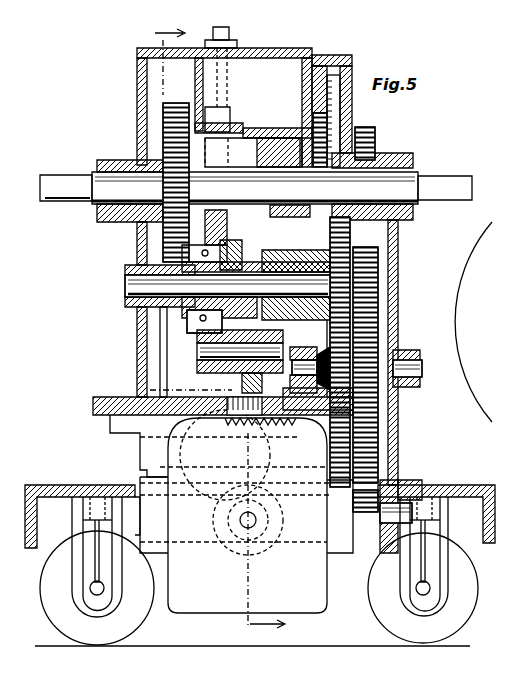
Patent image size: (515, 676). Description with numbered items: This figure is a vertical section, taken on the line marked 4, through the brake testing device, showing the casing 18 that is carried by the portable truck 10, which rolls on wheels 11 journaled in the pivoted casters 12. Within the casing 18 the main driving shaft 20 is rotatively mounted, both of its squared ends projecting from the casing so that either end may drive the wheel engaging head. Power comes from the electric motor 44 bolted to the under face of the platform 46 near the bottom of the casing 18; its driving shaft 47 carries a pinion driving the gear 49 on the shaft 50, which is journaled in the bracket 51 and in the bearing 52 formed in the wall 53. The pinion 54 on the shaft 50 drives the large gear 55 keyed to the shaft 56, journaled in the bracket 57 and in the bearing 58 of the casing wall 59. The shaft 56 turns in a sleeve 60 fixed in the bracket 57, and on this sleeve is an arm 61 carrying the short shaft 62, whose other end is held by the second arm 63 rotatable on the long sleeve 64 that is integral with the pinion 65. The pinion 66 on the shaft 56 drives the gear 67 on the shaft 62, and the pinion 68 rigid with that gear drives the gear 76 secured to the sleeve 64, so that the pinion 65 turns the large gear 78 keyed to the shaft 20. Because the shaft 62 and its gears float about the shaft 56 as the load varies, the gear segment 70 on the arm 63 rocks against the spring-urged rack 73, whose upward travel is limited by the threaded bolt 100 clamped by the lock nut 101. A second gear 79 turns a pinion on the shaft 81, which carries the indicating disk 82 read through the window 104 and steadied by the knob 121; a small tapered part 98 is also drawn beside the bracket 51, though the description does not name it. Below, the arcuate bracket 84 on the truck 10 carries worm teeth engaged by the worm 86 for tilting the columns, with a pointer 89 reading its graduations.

The section line 4 is at (220, 328).
The truck 10 is at (462, 485).
The wheels 11 is at (45, 592).
The casters 12 is at (85, 566).
The casing 18 is at (123, 252).
The main driving shaft 20 is at (386, 172).
The electric motor 44 is at (312, 573).
The platform 46 is at (95, 410).
The driving shaft of the motor 47 is at (400, 513).
The gear 49 is at (378, 435).
The shaft 50 is at (422, 370).
The bracket 51 is at (310, 356).
The bearing 52 is at (410, 350).
The wall 53 is at (398, 259).
The pinion 54 is at (330, 410).
The large gear 55 is at (350, 232).
The shaft 56 is at (125, 288).
The bracket 57 is at (296, 229).
The bearing 58 is at (128, 312).
The casing wall 59 is at (137, 347).
The sleeve 60 is at (291, 256).
The arm 61 is at (300, 347).
The short shaft 62 is at (197, 352).
The second arm 63 is at (230, 368).
The long sleeve 64 is at (194, 334).
The pinion 65 is at (147, 337).
The pinion 66 is at (248, 258).
The gear 67 is at (262, 383).
The pinion 68 is at (191, 389).
The gear segment 70 is at (256, 241).
The rack 73 is at (228, 150).
The gear 76 is at (252, 238).
The large gear 78 is at (163, 132).
The second gear 79 is at (400, 211).
The shaft 81 is at (312, 140).
The indicating wheel or disk 82 is at (351, 64).
The arcuate bracket 84 is at (138, 450).
The worm 86 is at (320, 110).
The pointer 89 is at (252, 433).
The cone clutch 98 is at (321, 362).
The threaded bolt 100 is at (229, 30).
The lock nut 101 is at (237, 42).
The window 104 is at (330, 55).
The knob 121 is at (366, 127).